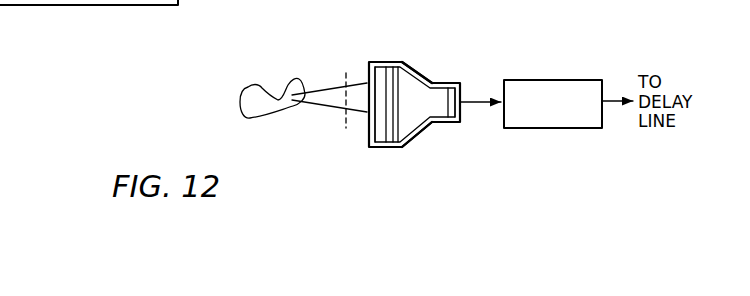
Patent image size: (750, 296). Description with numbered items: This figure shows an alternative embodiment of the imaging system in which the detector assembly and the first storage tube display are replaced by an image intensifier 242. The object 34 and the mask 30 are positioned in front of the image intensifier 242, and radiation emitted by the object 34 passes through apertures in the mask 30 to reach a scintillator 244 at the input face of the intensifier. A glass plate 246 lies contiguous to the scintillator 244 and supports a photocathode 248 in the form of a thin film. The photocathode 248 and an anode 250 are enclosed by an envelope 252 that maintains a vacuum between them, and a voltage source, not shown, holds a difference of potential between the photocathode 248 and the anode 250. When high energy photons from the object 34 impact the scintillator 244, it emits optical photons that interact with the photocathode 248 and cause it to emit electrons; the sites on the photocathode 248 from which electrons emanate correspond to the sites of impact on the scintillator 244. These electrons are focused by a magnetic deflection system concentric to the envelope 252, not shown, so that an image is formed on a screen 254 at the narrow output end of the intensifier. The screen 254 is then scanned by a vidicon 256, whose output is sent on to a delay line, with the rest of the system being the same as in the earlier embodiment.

The mask 30 is at (338, 124).
The object 34 is at (249, 84).
The image intensifier 242 is at (385, 151).
The scintillator 244 is at (375, 75).
The glass plate 246 is at (393, 68).
The photocathode 248 is at (404, 70).
The anode 250 is at (433, 122).
The envelope 252 is at (428, 78).
The screen 254 is at (463, 110).
The vidicon 256 is at (541, 81).